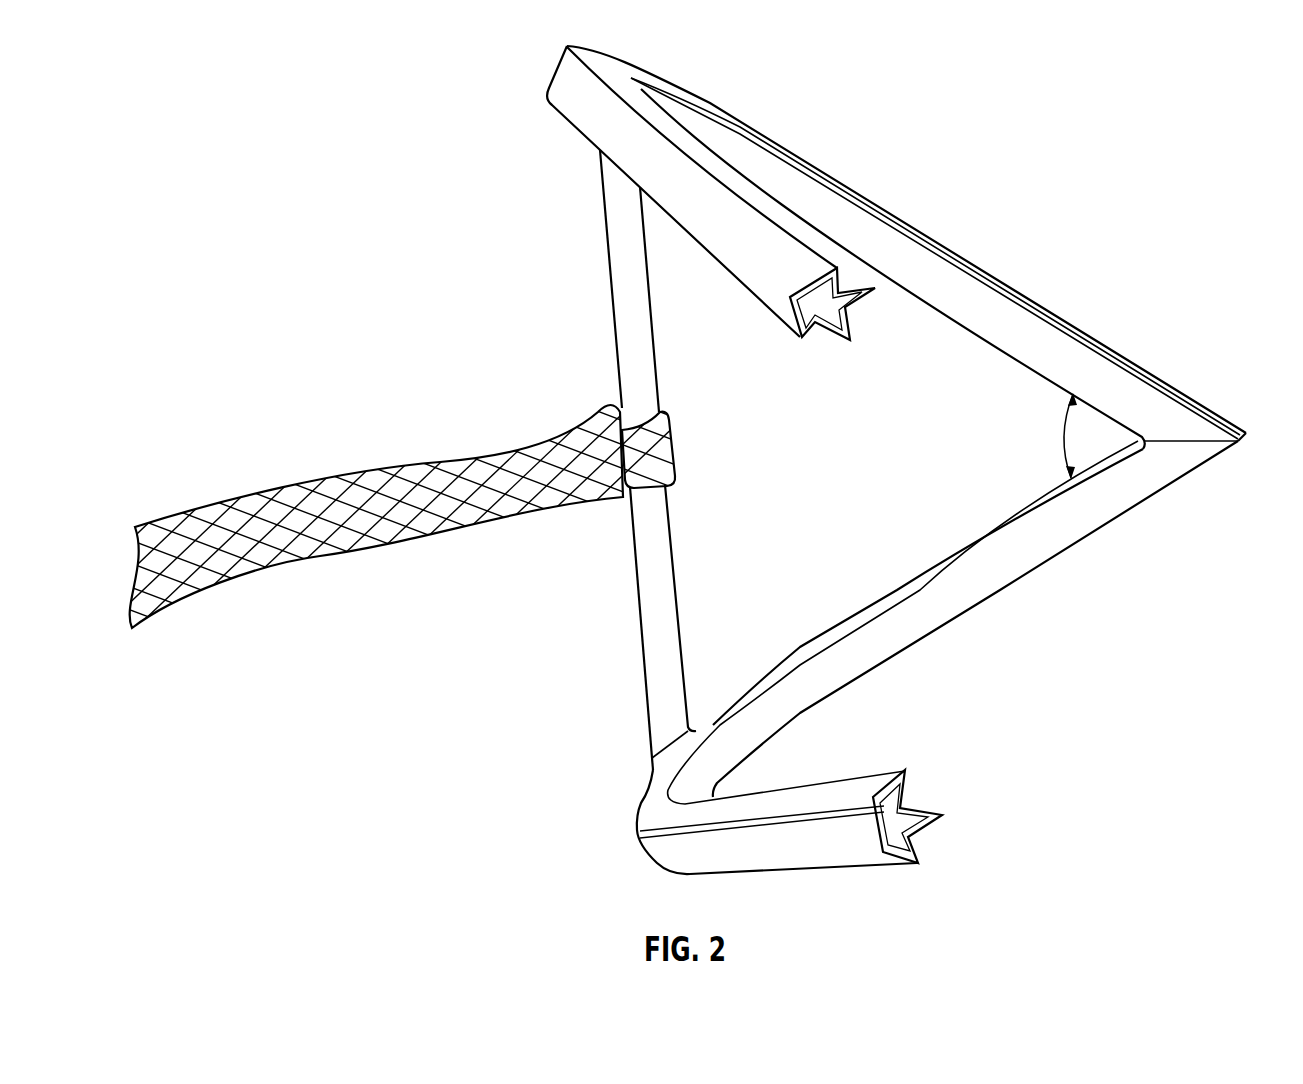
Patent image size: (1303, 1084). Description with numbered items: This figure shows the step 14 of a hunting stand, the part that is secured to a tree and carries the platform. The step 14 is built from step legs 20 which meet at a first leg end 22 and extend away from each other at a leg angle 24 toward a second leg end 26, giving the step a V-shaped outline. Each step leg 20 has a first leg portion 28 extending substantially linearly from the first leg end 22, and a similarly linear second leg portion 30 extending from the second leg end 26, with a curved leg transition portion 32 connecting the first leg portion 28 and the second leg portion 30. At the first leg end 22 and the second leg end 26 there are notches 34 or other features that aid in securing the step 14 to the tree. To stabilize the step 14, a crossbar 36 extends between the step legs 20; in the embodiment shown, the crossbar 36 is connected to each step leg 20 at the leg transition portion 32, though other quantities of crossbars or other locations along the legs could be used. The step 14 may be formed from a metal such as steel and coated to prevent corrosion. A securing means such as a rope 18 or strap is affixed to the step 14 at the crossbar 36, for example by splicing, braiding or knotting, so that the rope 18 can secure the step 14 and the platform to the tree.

The step 14 is at (1024, 130).
The rope 18 is at (360, 500).
The step legs 20 is at (1023, 313).
The first leg end 22 is at (1208, 408).
The leg angle 24 is at (1065, 437).
The second leg end 26 is at (883, 817).
The first leg portion 28 is at (1090, 353).
The second leg portion 30 is at (763, 243).
The leg transition portion 32 is at (713, 725).
The notches 34 is at (922, 841).
The crossbar 36 is at (628, 322).